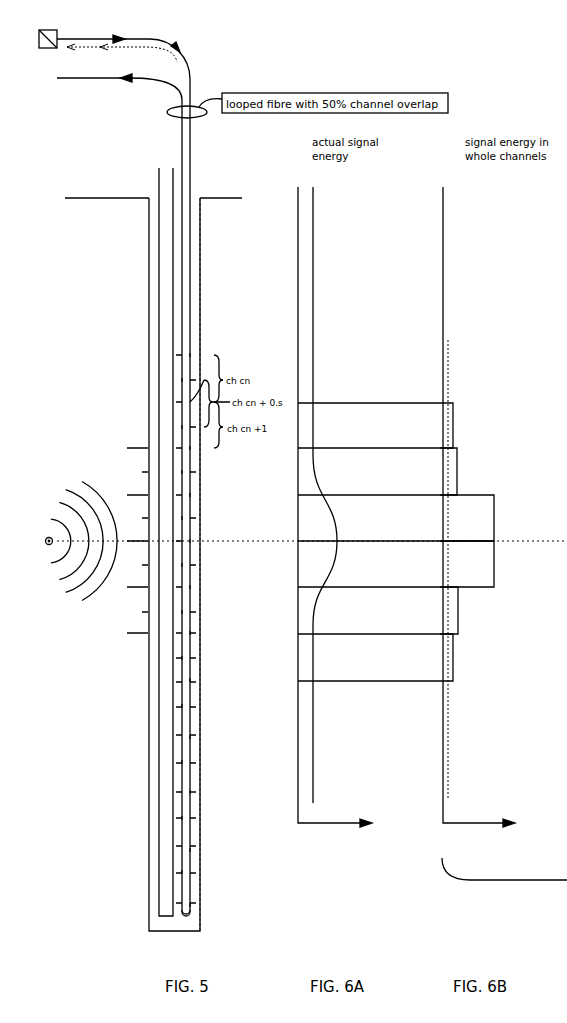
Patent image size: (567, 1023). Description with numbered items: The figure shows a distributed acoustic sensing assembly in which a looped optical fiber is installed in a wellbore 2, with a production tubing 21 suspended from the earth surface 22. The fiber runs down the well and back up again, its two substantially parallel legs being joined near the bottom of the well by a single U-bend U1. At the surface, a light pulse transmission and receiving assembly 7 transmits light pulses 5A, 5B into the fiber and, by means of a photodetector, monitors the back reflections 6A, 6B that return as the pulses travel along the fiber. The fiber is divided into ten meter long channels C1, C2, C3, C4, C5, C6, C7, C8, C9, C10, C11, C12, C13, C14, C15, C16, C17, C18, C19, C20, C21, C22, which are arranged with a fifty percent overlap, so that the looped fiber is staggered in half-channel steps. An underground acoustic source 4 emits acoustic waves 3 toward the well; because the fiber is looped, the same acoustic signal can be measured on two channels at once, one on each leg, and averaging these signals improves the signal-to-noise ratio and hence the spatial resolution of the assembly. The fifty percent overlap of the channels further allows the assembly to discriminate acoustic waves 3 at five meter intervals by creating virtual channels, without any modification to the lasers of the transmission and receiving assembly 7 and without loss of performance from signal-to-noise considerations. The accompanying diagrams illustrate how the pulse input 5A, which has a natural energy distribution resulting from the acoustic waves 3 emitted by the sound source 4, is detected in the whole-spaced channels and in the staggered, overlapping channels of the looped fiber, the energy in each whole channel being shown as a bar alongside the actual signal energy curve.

In FIG. 5, the wellbore 2 is at (157, 195).
In FIG. 5, the acoustic signal 3 is at (60, 498).
In FIG. 5, the acoustic source 4 is at (47, 548).
In FIG. 5, the light pulse 5A is at (177, 46).
In FIG. 6A, the light pulse 5A is at (314, 250).
In FIG. 5, the light pulse 5B is at (120, 39).
In FIG. 5, the back reflection 6A is at (85, 48).
In FIG. 5, the back reflection 6B is at (120, 48).
In FIG. 5, the light pulse transmission and receiving assembly 7 is at (47, 50).
In FIG. 5, the production tubing 21 is at (158, 168).
In FIG. 5, the earth surface 22 is at (107, 197).
In FIG. 5, the channel C1 is at (182, 380).
In FIG. 5, the channel C2 is at (182, 427).
In FIG. 6B, the channel C2 is at (453, 418).
In FIG. 5, the channel C3 is at (182, 472).
In FIG. 6B, the channel C3 is at (457, 462).
In FIG. 5, the channel C4 is at (182, 518).
In FIG. 6B, the channel C4 is at (494, 508).
In FIG. 5, the channel C5 is at (182, 565).
In FIG. 6B, the channel C5 is at (494, 562).
In FIG. 5, the channel C6 is at (182, 612).
In FIG. 6B, the channel C6 is at (458, 602).
In FIG. 5, the channel C7 is at (182, 658).
In FIG. 6B, the channel C7 is at (453, 647).
In FIG. 5, the channel C8 is at (182, 706).
In FIG. 5, the channel C9 is at (182, 762).
In FIG. 5, the channel C10 is at (182, 818).
In FIG. 5, the channel C11 is at (182, 872).
In FIG. 5, the channel C12 is at (191, 905).
In FIG. 5, the channel C13 is at (191, 850).
In FIG. 5, the channel C14 is at (191, 792).
In FIG. 5, the channel C15 is at (191, 737).
In FIG. 5, the channel C16 is at (191, 680).
In FIG. 5, the channel C17 is at (191, 633).
In FIG. 5, the channel C18 is at (191, 587).
In FIG. 5, the channel C19 is at (191, 541).
In FIG. 5, the channel C20 is at (191, 495).
In FIG. 5, the channel C21 is at (191, 448).
In FIG. 5, the channel C22 is at (214, 346).
In FIG. 5, the U-bend U1 is at (185, 917).